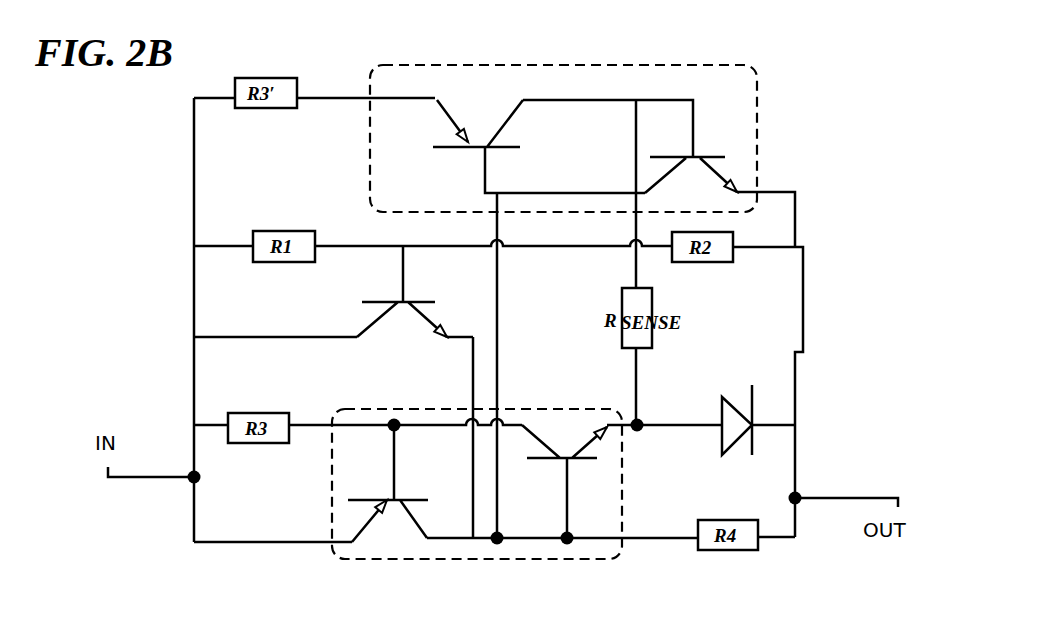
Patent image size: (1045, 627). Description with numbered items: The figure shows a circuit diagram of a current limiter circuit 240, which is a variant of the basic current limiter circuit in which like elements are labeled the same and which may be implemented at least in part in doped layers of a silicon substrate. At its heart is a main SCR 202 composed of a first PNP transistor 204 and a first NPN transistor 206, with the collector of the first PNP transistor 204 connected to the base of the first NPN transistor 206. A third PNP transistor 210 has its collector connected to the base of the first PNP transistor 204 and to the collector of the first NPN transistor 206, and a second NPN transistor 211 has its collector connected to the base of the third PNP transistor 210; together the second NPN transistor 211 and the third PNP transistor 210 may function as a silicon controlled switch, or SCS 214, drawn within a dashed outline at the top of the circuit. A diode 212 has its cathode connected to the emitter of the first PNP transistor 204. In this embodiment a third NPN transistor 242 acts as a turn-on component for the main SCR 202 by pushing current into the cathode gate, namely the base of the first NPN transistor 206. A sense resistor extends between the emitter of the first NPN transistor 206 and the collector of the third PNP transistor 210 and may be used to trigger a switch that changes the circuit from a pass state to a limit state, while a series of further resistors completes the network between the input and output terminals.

The current limiter circuit 240 is at (106, 300).
The SCS 214 is at (645, 65).
The third PNP transistor 210 is at (452, 115).
The second NPN transistor 211 is at (697, 157).
The third NPN transistor 242 is at (395, 302).
The main SCR 202 is at (532, 560).
The first PNP transistor 204 is at (418, 535).
The first NPN transistor 206 is at (538, 440).
The diode 212 is at (747, 410).